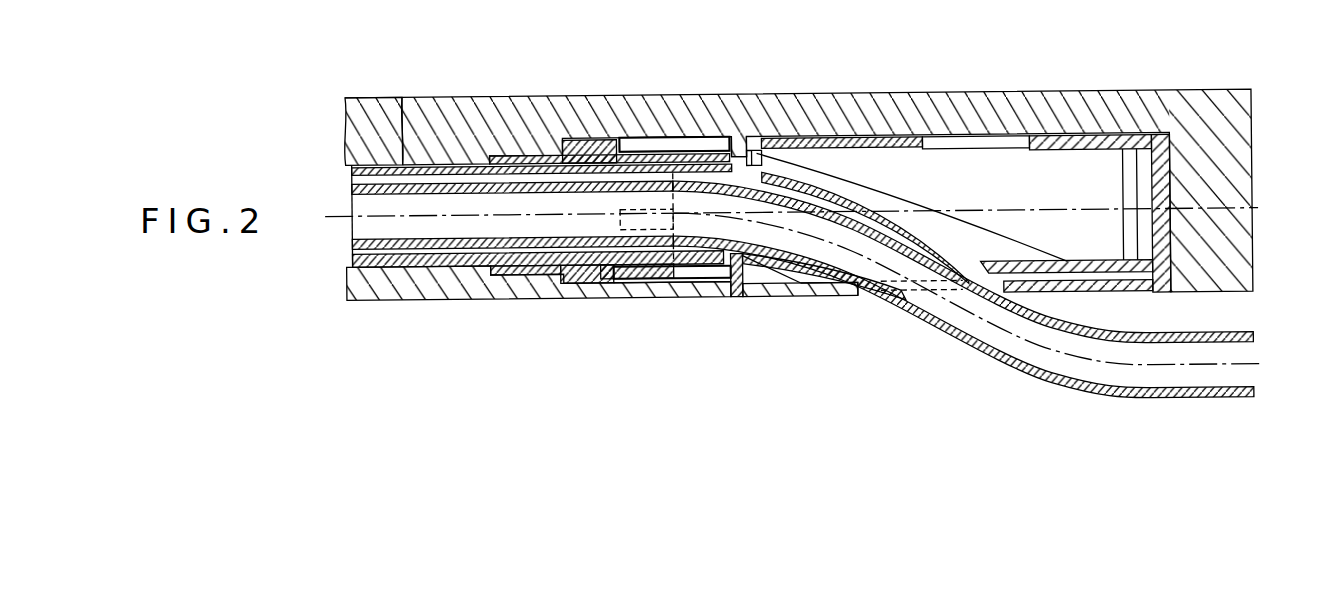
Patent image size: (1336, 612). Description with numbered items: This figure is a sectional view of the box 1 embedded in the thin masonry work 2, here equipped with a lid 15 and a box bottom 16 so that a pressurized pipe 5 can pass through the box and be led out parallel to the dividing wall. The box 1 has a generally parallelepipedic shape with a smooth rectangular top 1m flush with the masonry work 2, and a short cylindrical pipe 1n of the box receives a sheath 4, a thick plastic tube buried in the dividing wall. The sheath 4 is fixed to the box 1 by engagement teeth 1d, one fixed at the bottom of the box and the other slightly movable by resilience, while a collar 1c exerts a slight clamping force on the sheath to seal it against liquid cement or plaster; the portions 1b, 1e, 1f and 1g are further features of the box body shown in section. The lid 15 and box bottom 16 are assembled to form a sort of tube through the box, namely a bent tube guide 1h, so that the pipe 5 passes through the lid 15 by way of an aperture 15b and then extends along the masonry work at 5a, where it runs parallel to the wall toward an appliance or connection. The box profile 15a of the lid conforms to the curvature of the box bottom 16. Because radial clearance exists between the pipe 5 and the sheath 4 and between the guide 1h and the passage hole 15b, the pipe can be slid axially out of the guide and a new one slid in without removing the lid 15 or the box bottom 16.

The box 1 is at (1085, 136).
The inner ring portion 1b is at (500, 268).
The collar 1c is at (552, 269).
The engagement teeth 1d is at (615, 136).
The housing lip 1e is at (733, 136).
The thin sleeve band 1f is at (952, 137).
The annular gap 1g is at (1008, 122).
The bent tube guide 1h is at (957, 292).
The smooth rectangular top 1m is at (612, 289).
The short cylindrical pipe 1n is at (518, 150).
The masonry work 2 is at (1150, 95).
The sheath 4 is at (401, 98).
The pipe 5 is at (352, 181).
The pipe portion parallel to the dividing wall 5a is at (987, 362).
The lid 15 is at (736, 297).
The box profile 15a is at (805, 297).
The aperture 15b is at (855, 297).
The box bottom 16 is at (808, 166).